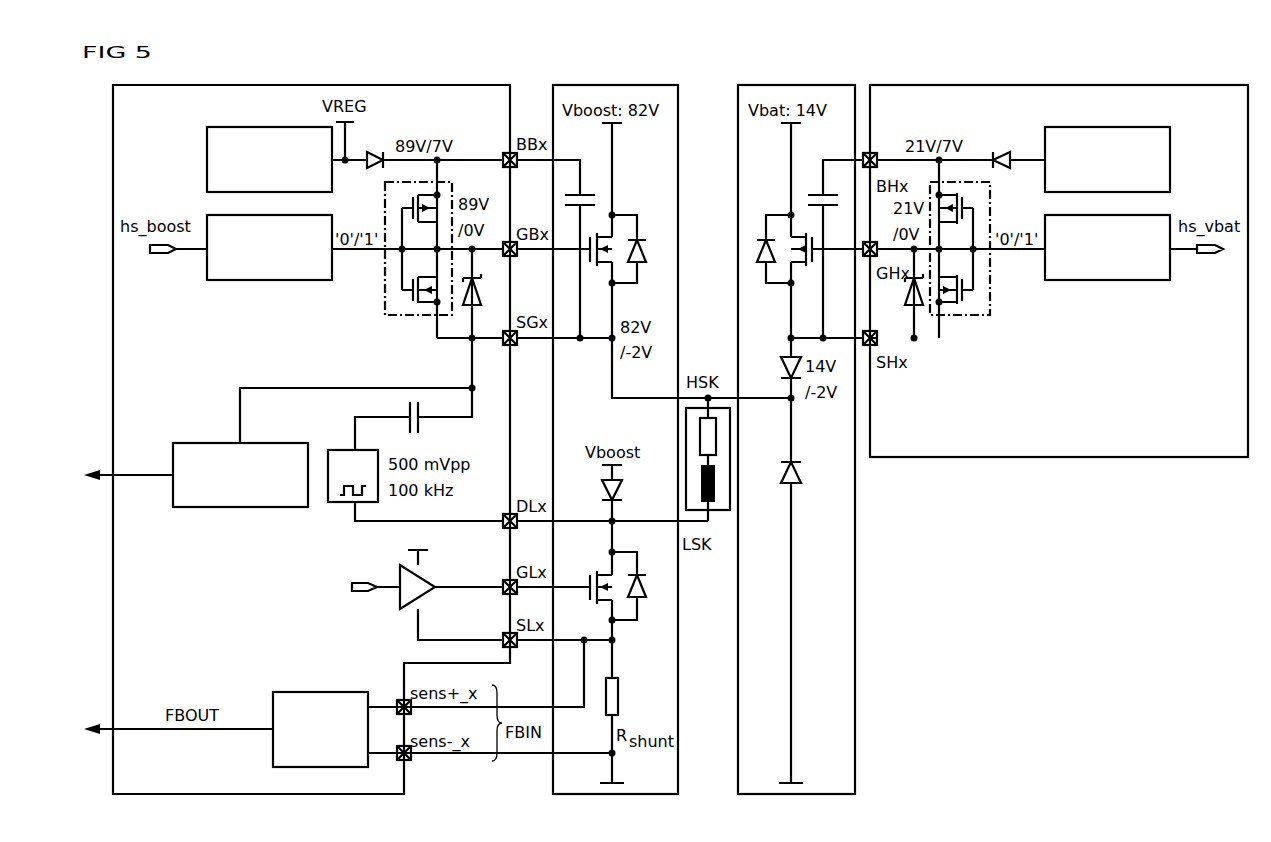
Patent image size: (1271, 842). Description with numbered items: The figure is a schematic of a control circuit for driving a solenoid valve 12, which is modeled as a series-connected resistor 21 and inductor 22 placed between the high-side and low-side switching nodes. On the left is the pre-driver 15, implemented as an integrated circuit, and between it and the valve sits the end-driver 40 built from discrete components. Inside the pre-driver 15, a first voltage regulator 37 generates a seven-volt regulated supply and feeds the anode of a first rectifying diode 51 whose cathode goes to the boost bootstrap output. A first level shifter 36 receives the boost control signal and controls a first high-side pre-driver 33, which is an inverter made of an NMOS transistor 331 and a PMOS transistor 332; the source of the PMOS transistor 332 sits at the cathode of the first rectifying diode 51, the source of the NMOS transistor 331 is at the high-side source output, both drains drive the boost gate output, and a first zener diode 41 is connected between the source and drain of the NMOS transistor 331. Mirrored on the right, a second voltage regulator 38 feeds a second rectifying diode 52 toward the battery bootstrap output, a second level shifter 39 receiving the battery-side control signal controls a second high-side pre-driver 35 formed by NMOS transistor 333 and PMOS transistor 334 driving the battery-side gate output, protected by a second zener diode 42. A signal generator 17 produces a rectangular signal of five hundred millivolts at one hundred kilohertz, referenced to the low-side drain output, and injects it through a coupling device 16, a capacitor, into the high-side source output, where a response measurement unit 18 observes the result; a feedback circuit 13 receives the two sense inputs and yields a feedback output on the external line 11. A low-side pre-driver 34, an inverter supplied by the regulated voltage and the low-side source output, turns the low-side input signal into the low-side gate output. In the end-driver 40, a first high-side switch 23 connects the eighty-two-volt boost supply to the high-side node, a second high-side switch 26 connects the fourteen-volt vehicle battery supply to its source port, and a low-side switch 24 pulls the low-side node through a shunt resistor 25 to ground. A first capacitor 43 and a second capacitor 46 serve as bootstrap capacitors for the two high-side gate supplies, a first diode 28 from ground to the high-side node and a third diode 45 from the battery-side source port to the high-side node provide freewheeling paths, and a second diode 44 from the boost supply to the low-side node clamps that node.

The output connection 11 is at (94, 472).
The solenoid valve 12 is at (705, 459).
The feedback circuit 13 is at (320, 692).
The pre-driver 15 is at (404, 774).
The coupling device 16 is at (408, 412).
The signal generator 17 is at (338, 450).
The response measurement unit 18 is at (208, 443).
The resistor 21 is at (718, 436).
The inductor 22 is at (716, 496).
The first high-side switch 23 is at (628, 210).
The low-side switch 24 is at (624, 628).
The shunt resistor 25 is at (620, 700).
The second high-side switch 26 is at (787, 212).
The first diode 28 is at (794, 488).
The first high-side pre-driver 33 is at (391, 274).
The low-side pre-driver 34 is at (400, 577).
The second high-side pre-driver 35 is at (985, 275).
The first level shifter 36 is at (268, 280).
The first voltage regulator 37 is at (207, 160).
The second voltage regulator 38 is at (1170, 160).
The second level shifter 39 is at (1105, 280).
The end-driver 40 is at (678, 187).
The first zener diode 41 is at (475, 308).
The second zener diode 42 is at (917, 308).
The first capacitor 43 is at (586, 191).
The second diode 44 is at (596, 490).
The third diode 45 is at (786, 357).
The second capacitor 46 is at (820, 191).
The first rectifying diode 51 is at (378, 150).
The second rectifying diode 52 is at (1000, 150).
The NMOS transistor 331 is at (408, 292).
The PMOS transistor 332 is at (408, 203).
The NMOS transistor 333 is at (966, 292).
The PMOS transistor 334 is at (966, 203).